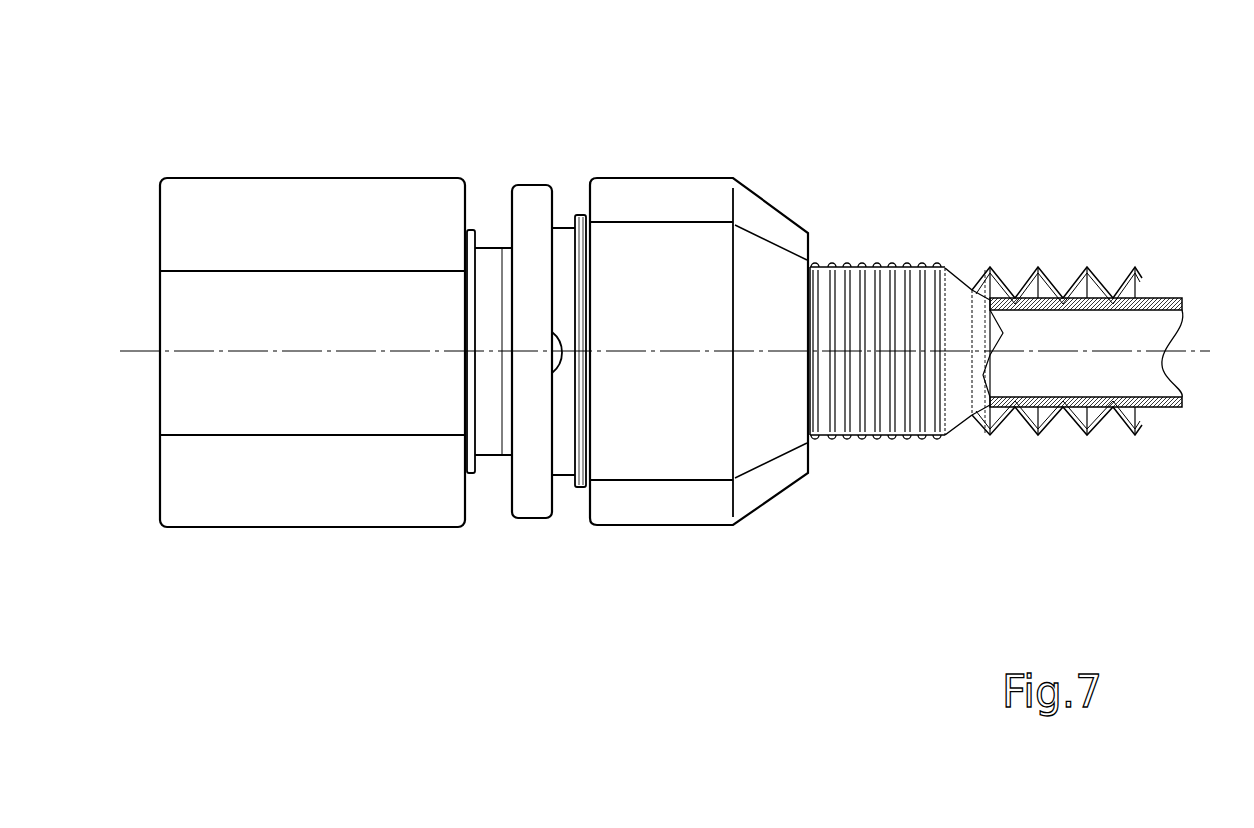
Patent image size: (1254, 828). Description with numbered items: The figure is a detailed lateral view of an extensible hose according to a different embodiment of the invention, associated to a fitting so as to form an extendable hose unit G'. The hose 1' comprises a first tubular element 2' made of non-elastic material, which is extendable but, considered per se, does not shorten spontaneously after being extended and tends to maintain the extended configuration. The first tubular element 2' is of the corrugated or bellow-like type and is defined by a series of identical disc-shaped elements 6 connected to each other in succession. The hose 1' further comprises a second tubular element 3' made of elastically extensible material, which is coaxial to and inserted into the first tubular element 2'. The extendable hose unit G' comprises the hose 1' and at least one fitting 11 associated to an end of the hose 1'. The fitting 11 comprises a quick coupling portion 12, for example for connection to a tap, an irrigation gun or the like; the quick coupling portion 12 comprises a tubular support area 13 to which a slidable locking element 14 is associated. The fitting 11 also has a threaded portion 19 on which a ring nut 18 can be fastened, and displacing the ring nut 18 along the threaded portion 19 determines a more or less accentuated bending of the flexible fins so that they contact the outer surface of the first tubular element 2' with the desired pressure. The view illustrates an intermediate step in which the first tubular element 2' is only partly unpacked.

The extendable hose unit G' is at (781, 347).
The hose 1' is at (1056, 312).
The first tubular element 2' is at (1017, 379).
The second tubular element 3' is at (1105, 286).
The disc-shaped elements 6 is at (882, 258).
The fitting 11 is at (650, 542).
The quick coupling portion 12 is at (356, 542).
The tubular support area 13 is at (480, 478).
The slidable locking element 14 is at (367, 203).
The ring nut 18 is at (760, 485).
The threaded portion 19 is at (585, 215).